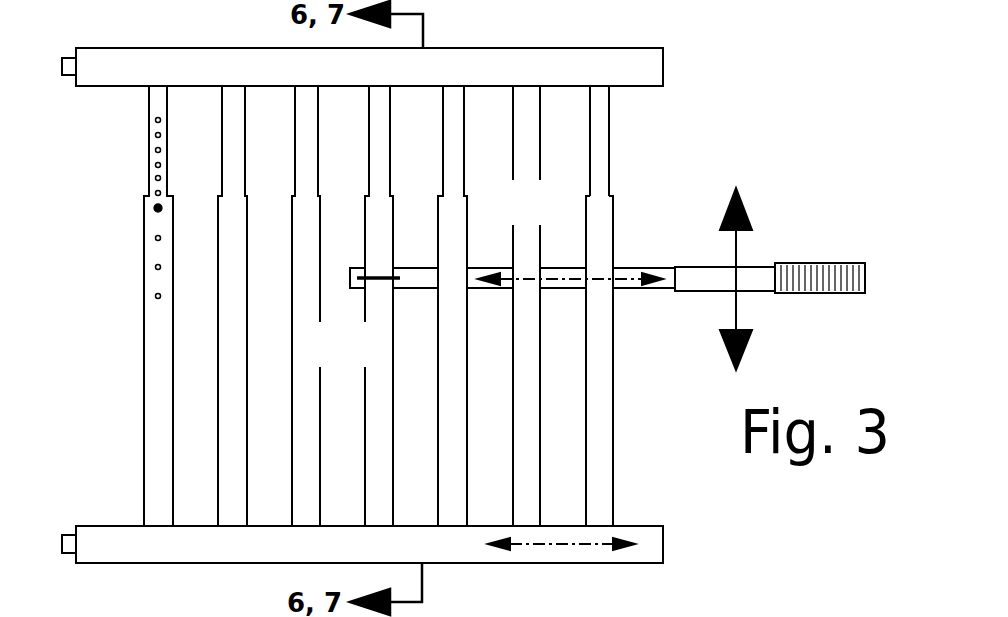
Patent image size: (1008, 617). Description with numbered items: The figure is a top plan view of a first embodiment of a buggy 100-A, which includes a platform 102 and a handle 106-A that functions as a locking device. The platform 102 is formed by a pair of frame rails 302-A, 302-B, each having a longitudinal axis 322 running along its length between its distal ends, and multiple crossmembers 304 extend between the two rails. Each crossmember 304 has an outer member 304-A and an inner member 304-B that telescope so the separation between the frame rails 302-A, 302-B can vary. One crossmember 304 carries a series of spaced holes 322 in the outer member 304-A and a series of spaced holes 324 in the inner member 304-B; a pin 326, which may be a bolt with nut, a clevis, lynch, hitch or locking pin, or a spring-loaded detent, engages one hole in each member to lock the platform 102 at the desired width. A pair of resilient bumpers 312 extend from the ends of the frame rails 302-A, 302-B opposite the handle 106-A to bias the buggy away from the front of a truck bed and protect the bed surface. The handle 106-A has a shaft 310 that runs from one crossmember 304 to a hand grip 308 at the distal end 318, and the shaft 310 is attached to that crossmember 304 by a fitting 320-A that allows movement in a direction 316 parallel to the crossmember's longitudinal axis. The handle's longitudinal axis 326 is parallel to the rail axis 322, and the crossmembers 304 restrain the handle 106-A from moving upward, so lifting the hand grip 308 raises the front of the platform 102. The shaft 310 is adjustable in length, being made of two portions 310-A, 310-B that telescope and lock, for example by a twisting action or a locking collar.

The buggy 100-A is at (792, 60).
The platform 102 is at (610, 48).
The frame rail 302-A is at (200, 48).
The frame rail 302-B is at (110, 525).
The bumpers 312 is at (64, 76).
The crossmembers 304 is at (144, 398).
The outer member 304-A is at (614, 470).
The inner member 304-B is at (609, 107).
The holes 324 is at (156, 150).
The pin 326 is at (156, 208).
The longitudinal axis 322 is at (156, 267).
The fitting 320-A is at (380, 280).
The shaft 310 is at (622, 268).
The shaft portion 310-A is at (755, 292).
The shaft portion 310-B is at (567, 288).
The direction 316 is at (734, 237).
The handle 106-A is at (805, 263).
The distal end 318 is at (853, 263).
The hand grip 308 is at (850, 293).